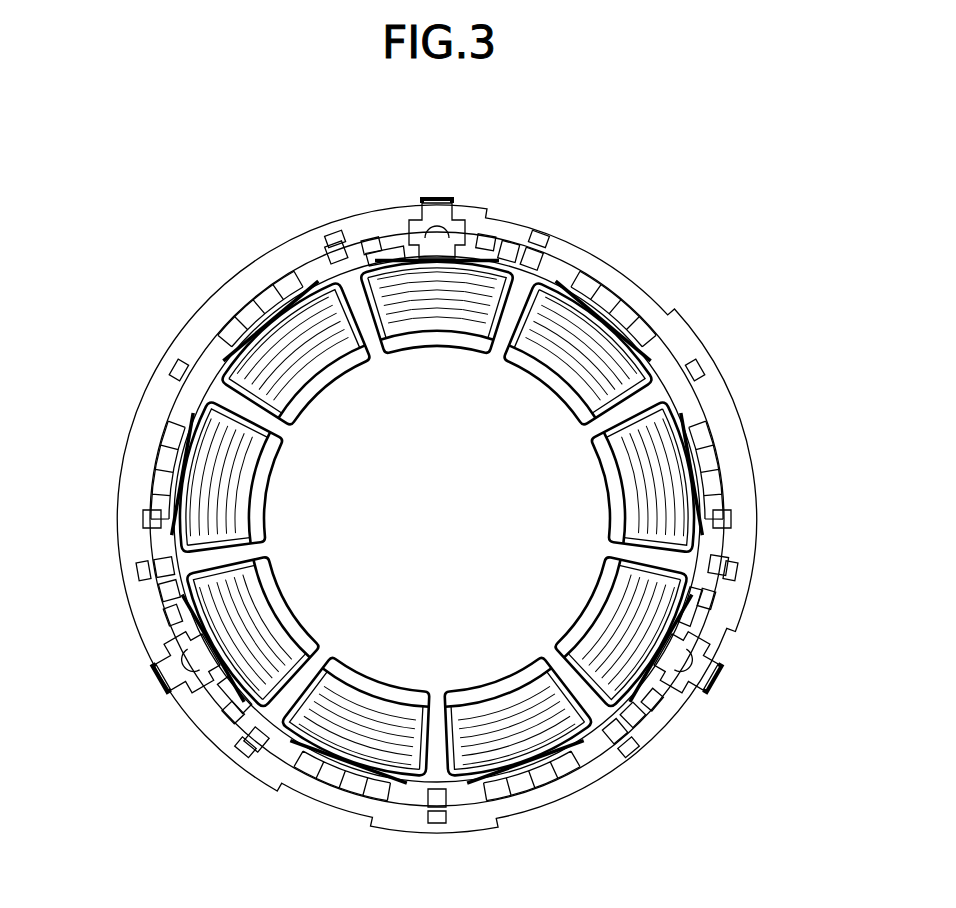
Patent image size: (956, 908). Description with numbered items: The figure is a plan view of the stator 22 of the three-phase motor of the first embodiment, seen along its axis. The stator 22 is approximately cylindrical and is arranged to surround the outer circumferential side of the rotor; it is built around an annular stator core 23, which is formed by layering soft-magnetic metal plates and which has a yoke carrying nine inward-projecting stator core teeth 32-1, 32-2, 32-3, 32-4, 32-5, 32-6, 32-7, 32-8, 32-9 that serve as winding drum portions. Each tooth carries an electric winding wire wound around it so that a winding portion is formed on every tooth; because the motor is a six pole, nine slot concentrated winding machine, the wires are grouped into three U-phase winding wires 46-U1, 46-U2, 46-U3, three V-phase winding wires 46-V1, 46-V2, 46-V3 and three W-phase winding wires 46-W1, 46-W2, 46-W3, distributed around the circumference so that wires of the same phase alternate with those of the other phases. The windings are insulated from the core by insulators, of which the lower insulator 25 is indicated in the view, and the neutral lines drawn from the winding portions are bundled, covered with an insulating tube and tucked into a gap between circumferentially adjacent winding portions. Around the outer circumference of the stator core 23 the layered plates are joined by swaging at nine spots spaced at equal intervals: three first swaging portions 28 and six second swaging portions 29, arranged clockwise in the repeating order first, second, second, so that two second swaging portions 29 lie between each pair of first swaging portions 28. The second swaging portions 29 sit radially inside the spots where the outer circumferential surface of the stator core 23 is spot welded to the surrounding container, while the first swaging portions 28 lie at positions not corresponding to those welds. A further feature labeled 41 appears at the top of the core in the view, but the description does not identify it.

The stator 22 is at (436, 492).
The stator core 23 is at (578, 243).
The lower insulator 25 is at (545, 256).
The first swaging portion 28 is at (336, 237).
The second swaging portion 29 is at (536, 238).
The positioning portion 41 is at (490, 238).
The stator core tooth 32-1 is at (397, 356).
The stator core tooth 32-2 is at (514, 367).
The stator core tooth 32-3 is at (590, 453).
The stator core tooth 32-4 is at (591, 568).
The stator core tooth 32-5 is at (525, 658).
The stator core tooth 32-6 is at (345, 659).
The stator core tooth 32-7 is at (272, 568).
The stator core tooth 32-8 is at (269, 526).
The stator core tooth 32-9 is at (305, 416).
The U-phase winding wire 46-U1 is at (603, 651).
The U-phase winding wire 46-U2 is at (266, 652).
The U-phase winding wire 46-U3 is at (436, 290).
The V-phase winding wire 46-V1 is at (229, 461).
The V-phase winding wire 46-V2 is at (559, 345).
The V-phase winding wire 46-V3 is at (528, 706).
The W-phase winding wire 46-W1 is at (341, 704).
The W-phase winding wire 46-W2 is at (295, 347).
The W-phase winding wire 46-W3 is at (640, 461).